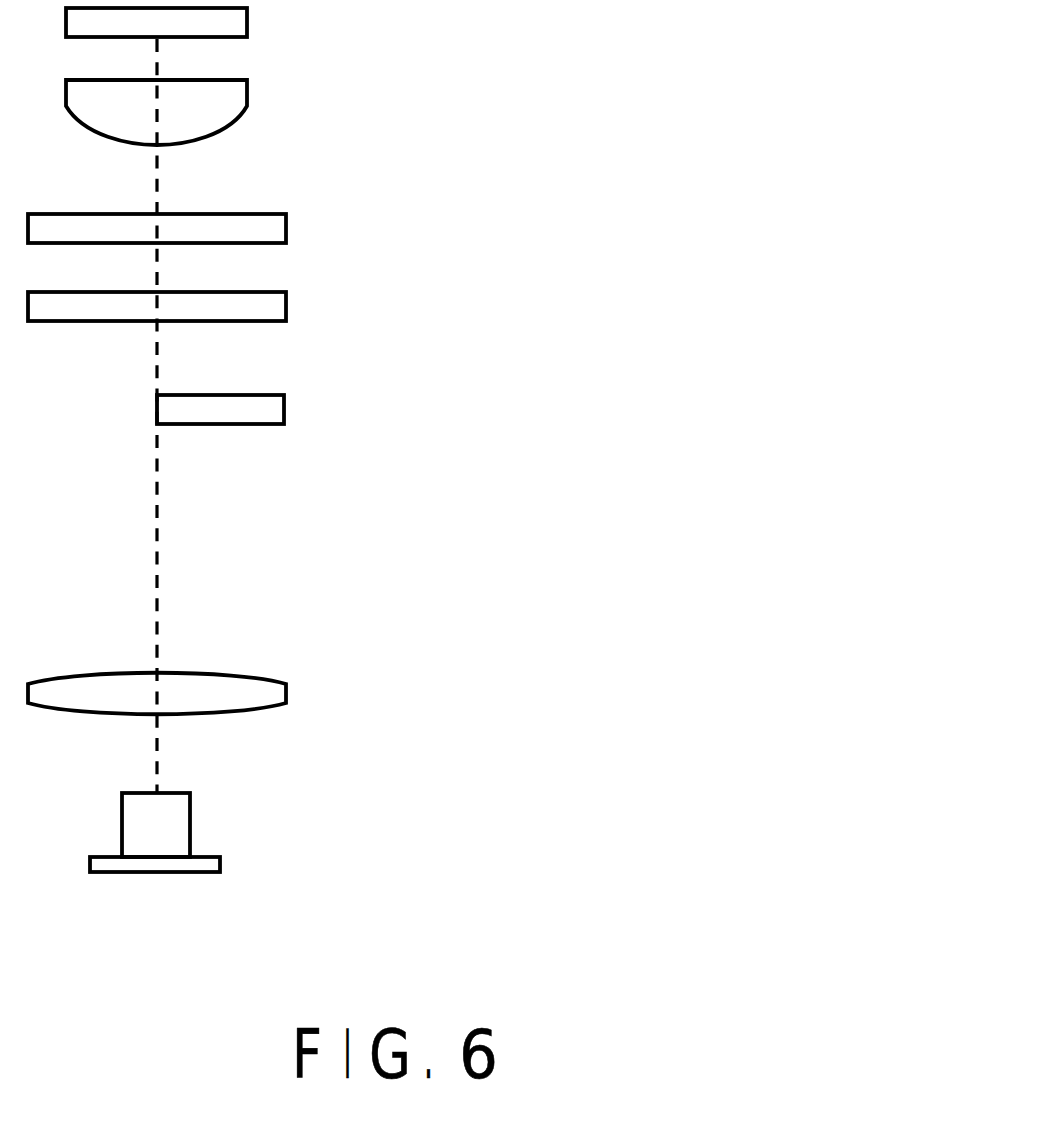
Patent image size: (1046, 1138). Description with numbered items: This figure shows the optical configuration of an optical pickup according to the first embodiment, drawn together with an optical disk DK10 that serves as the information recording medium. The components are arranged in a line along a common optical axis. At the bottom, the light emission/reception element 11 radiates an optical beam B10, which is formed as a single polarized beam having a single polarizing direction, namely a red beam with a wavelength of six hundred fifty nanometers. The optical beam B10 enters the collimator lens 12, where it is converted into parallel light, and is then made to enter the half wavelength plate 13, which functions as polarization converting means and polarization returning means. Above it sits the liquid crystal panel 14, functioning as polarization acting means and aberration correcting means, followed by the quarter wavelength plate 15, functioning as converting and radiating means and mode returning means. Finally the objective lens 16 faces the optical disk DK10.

The optical disk DK10 is at (247, 22).
The objective lens 16 is at (247, 100).
The quarter wavelength plate 15 is at (286, 228).
The liquid crystal panel 14 is at (286, 306).
The half wavelength plate 13 is at (284, 409).
The optical beam B10 is at (157, 493).
The collimator lens 12 is at (286, 694).
The light emission/reception element 11 is at (147, 873).